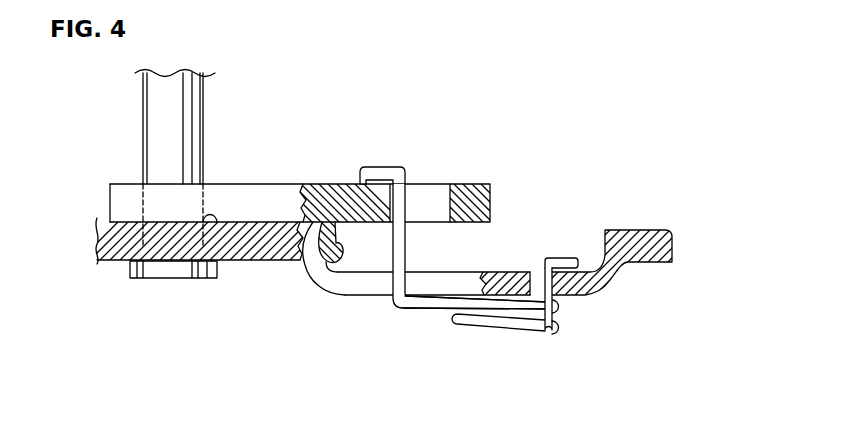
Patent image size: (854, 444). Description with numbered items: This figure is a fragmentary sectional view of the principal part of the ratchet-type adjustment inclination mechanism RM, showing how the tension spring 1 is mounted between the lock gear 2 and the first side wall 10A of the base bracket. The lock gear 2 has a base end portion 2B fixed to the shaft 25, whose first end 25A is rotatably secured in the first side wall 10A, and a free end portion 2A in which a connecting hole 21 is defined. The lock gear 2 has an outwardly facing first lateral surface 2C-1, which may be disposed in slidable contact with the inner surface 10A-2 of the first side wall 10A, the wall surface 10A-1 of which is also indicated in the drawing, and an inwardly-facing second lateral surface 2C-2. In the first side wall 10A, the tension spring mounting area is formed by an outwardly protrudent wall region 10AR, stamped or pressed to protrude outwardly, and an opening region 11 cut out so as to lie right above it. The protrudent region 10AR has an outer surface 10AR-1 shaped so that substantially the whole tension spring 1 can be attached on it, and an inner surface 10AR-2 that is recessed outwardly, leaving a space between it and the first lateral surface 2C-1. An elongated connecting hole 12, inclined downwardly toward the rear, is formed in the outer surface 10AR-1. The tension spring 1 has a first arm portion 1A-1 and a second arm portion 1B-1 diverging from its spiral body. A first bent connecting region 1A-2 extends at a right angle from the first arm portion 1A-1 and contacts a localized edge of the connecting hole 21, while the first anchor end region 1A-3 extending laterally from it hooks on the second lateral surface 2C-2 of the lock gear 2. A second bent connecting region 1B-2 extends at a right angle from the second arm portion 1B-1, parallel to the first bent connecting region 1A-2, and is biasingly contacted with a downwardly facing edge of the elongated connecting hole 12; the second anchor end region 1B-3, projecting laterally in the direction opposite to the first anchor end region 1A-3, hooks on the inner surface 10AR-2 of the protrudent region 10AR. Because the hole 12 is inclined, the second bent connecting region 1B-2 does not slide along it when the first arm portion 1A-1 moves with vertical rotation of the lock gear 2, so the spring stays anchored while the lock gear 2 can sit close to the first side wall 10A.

The tension spring 1 is at (504, 252).
The first arm portion 1A-1 is at (422, 313).
The first bent connecting region 1A-2 is at (405, 250).
The first anchor end region 1A-3 is at (382, 172).
The second arm portion 1B-1 is at (558, 333).
The second bent connecting region 1B-2 is at (537, 323).
The second anchor end region 1B-3 is at (563, 257).
The lock gear 2 is at (244, 183).
The free end portion 2A is at (478, 183).
The base end portion 2B is at (125, 183).
The first lateral surface 2C-1 is at (320, 234).
The second lateral surface 2C-2 is at (333, 183).
The first side wall 10A is at (678, 232).
The bracket plate lower surface 10A-1 is at (248, 262).
The inner surface 10A-2 is at (203, 223).
The outwardly protrudent wall region 10AR is at (345, 298).
The outer surface 10AR-1 is at (367, 297).
The inner surface 10AR-2 is at (335, 290).
The opening region 11 is at (378, 286).
The elongated connecting hole 12 is at (530, 268).
The connecting hole 21 is at (445, 200).
The shaft 25 is at (157, 110).
The first end 25A is at (147, 279).
The ratchet-type adjustment inclination mechanism RM is at (578, 95).